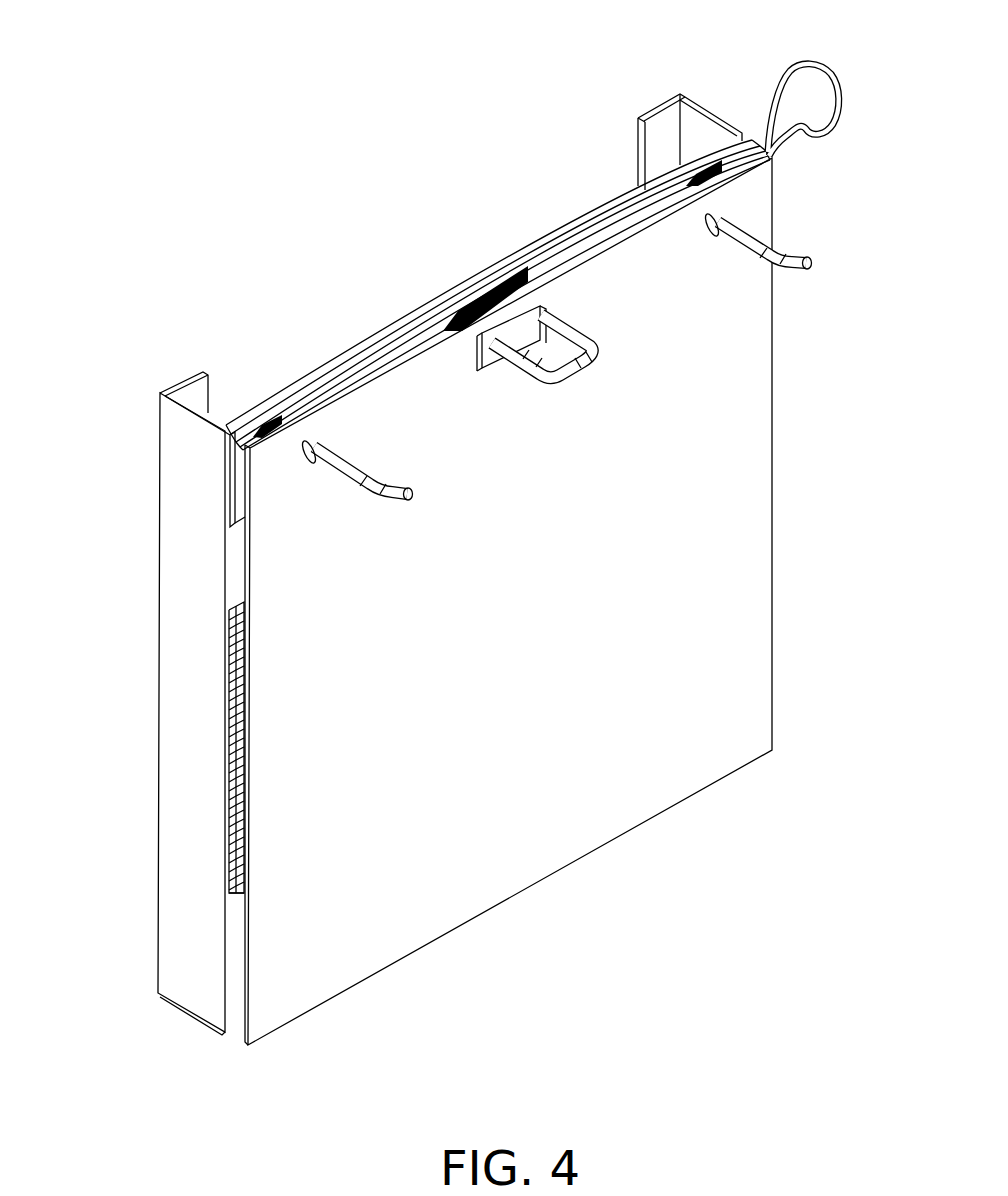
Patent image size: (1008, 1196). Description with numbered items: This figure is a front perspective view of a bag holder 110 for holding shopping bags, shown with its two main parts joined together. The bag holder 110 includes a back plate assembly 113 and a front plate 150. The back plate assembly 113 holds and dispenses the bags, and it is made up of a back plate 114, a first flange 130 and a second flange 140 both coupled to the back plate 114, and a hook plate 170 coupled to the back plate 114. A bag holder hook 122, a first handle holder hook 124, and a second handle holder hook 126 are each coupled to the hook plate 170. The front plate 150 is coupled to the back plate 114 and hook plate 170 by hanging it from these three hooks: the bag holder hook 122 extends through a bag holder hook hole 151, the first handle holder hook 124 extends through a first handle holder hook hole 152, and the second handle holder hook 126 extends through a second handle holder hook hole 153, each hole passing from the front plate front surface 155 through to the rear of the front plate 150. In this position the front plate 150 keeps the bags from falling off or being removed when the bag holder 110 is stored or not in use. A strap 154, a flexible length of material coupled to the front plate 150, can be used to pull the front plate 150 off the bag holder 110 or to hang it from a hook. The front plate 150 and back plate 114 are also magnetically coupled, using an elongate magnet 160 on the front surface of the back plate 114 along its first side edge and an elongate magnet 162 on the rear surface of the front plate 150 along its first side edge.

The bag holder 110 is at (372, 142).
The back plate assembly 113 is at (140, 689).
The back plate 114 is at (290, 390).
The bag holder hook 122 is at (566, 382).
The first handle holder hook 124 is at (396, 500).
The second handle holder hook 126 is at (800, 270).
The first flange 130 is at (171, 432).
The second flange 140 is at (705, 115).
The front plate 150 is at (760, 540).
The bag holder hook hole 151 is at (512, 330).
The first handle holder hook hole 152 is at (318, 444).
The second handle holder hook hole 153 is at (708, 230).
The strap 154 is at (828, 92).
The front plate front surface 155 is at (572, 628).
The magnet 160 is at (228, 820).
The magnet 162 is at (232, 860).
The hook plate 170 is at (333, 372).